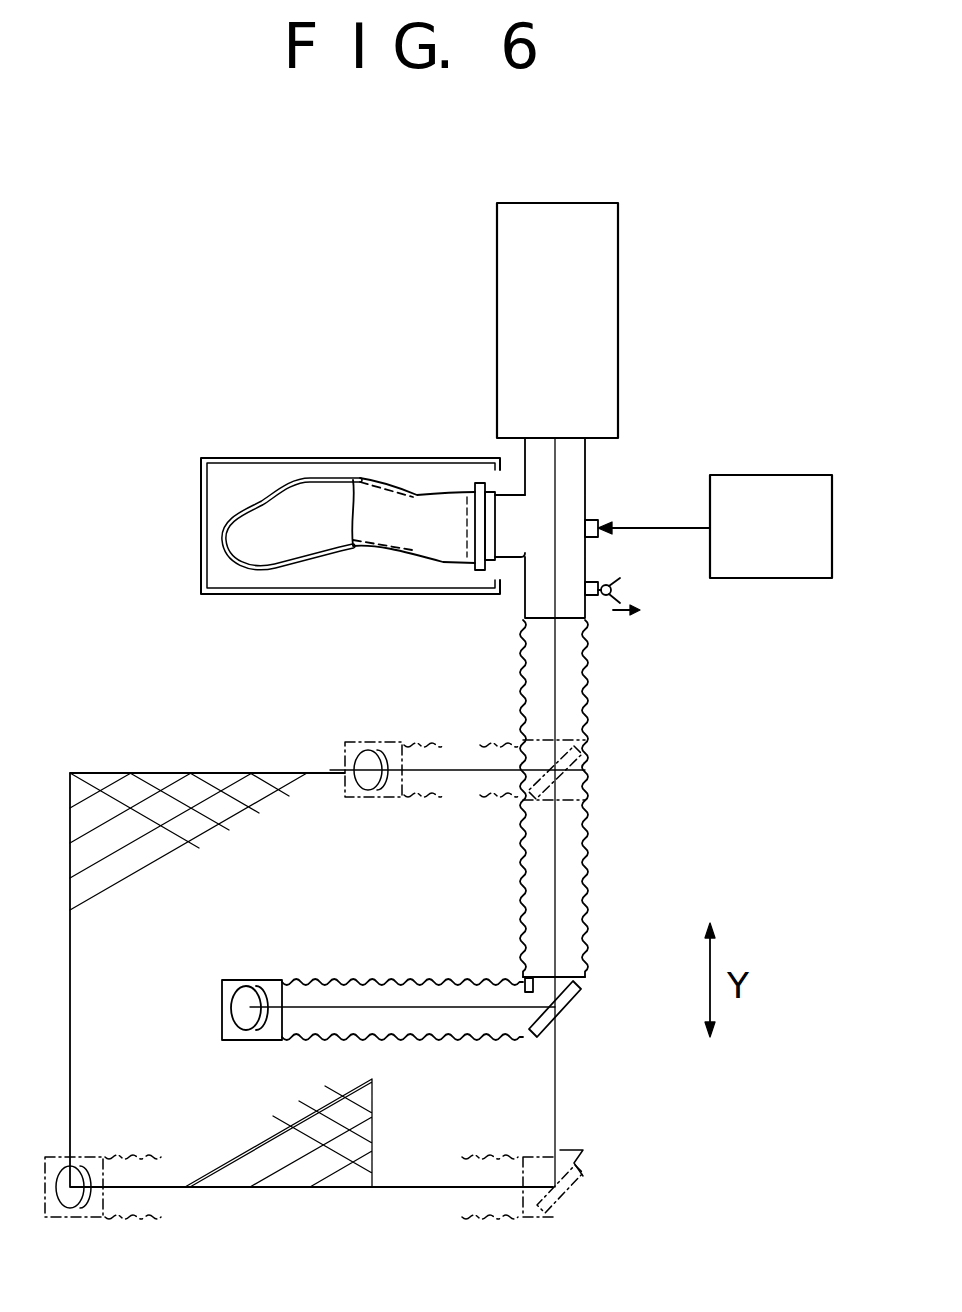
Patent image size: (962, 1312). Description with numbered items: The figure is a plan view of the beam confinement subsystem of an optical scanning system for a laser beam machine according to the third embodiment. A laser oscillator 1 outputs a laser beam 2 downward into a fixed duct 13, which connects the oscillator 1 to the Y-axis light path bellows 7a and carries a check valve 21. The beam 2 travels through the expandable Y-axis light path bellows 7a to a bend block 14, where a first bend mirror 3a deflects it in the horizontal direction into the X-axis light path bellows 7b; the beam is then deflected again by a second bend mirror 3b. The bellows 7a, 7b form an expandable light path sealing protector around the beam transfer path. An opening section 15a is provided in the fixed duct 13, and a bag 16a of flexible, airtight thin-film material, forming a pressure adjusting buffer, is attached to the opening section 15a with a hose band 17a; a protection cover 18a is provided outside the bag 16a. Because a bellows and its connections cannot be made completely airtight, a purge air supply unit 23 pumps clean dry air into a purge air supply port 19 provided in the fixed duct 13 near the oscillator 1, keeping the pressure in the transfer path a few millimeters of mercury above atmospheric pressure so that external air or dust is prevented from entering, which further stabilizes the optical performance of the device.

The laser oscillator 1 is at (602, 240).
The fixed duct 13 is at (577, 468).
The laser beam 2 is at (558, 592).
The opening section 15a is at (513, 535).
The hose band 17a is at (473, 567).
The bag 16a is at (402, 480).
The protection cover 18a is at (252, 458).
The purge air supply unit 23 is at (797, 478).
The purge air supply port 19 is at (598, 518).
The check valve 21 is at (620, 593).
The Y-axis light path bellows 7a is at (578, 862).
The bend block 14 is at (580, 980).
The first bend mirror 3a is at (570, 1010).
The X-axis light path bellows 7b is at (432, 1025).
The second bend mirror 3b is at (243, 1000).